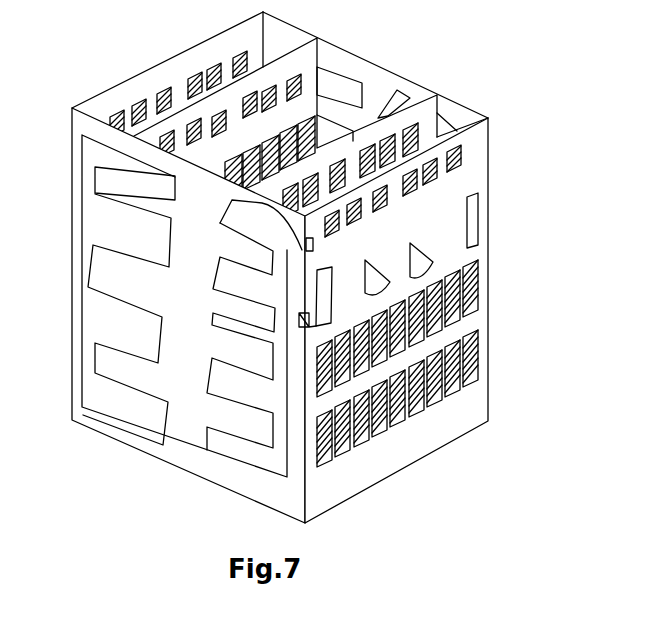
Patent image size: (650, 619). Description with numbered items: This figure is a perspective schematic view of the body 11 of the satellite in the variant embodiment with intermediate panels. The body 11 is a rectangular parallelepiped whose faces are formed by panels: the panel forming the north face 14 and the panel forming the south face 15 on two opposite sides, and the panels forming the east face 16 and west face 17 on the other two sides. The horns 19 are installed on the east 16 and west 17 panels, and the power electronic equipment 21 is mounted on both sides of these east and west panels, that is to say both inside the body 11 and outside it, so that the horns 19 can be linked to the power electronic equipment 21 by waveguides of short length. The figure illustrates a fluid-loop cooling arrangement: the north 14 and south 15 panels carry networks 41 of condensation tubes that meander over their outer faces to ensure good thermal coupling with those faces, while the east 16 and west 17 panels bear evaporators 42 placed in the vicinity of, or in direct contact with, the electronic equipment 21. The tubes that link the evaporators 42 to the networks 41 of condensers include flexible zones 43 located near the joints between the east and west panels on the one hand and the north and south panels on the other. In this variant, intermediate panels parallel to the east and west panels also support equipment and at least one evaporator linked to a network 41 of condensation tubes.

The body 11 is at (428, 41).
The north face panel 14 is at (452, 101).
The south face panel 15 is at (188, 315).
The east face panel 16 is at (122, 86).
The west face panel 17 is at (478, 168).
The horns 19 is at (434, 262).
The power electronic equipment 21 is at (474, 350).
The networks of condensation tubes 41 is at (123, 427).
The evaporators 42 is at (479, 214).
The flexible zones 43 is at (314, 242).